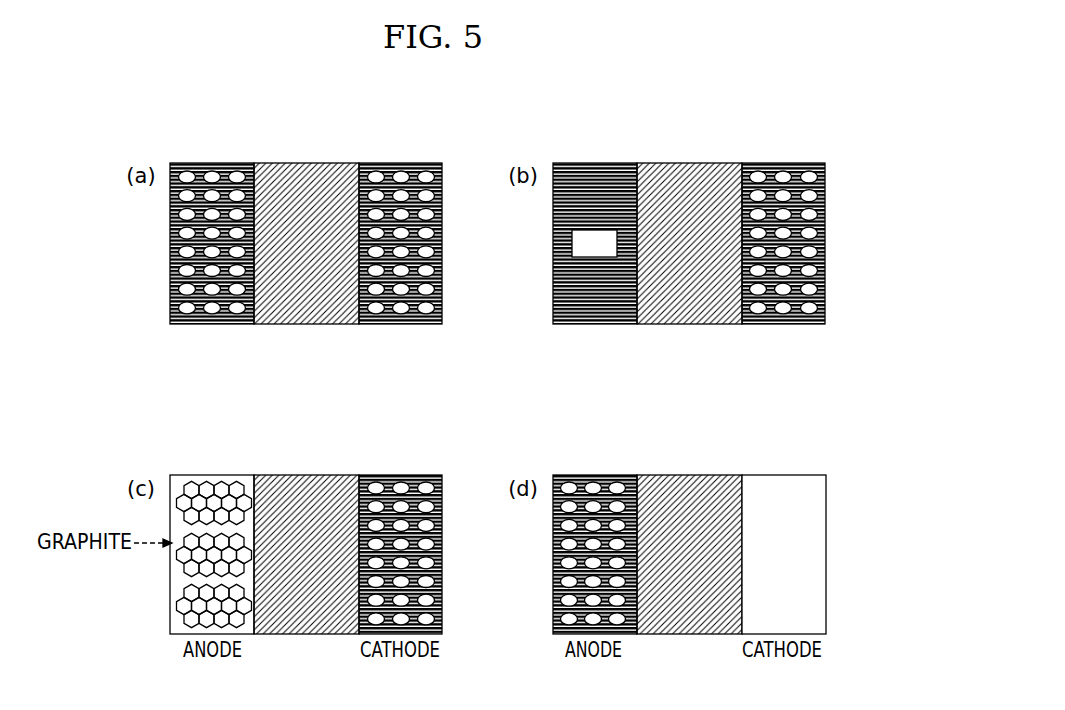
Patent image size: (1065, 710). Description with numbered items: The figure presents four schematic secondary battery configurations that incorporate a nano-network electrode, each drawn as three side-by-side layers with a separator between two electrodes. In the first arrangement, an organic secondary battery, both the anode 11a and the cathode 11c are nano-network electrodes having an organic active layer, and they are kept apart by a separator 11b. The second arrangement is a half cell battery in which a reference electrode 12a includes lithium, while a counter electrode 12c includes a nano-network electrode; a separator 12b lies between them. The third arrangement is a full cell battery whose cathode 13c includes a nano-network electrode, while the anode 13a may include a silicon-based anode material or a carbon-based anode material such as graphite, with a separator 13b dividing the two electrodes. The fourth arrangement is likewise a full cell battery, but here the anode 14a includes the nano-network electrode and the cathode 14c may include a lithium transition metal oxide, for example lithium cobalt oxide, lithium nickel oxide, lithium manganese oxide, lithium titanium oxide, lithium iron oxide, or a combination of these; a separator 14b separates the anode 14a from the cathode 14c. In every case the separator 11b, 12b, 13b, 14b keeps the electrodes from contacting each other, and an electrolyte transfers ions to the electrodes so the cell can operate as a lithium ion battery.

The anode 11a is at (223, 162).
The separator 11b is at (315, 167).
The cathode 11c is at (409, 165).
The reference electrode 12a is at (607, 163).
The separator 12b is at (697, 167).
The counter electrode 12c is at (791, 165).
The anode 13a is at (224, 478).
The separator 13b is at (315, 480).
The cathode 13c is at (409, 475).
The anode 14a is at (607, 475).
The separator 14b is at (697, 480).
The cathode 14c is at (791, 480).